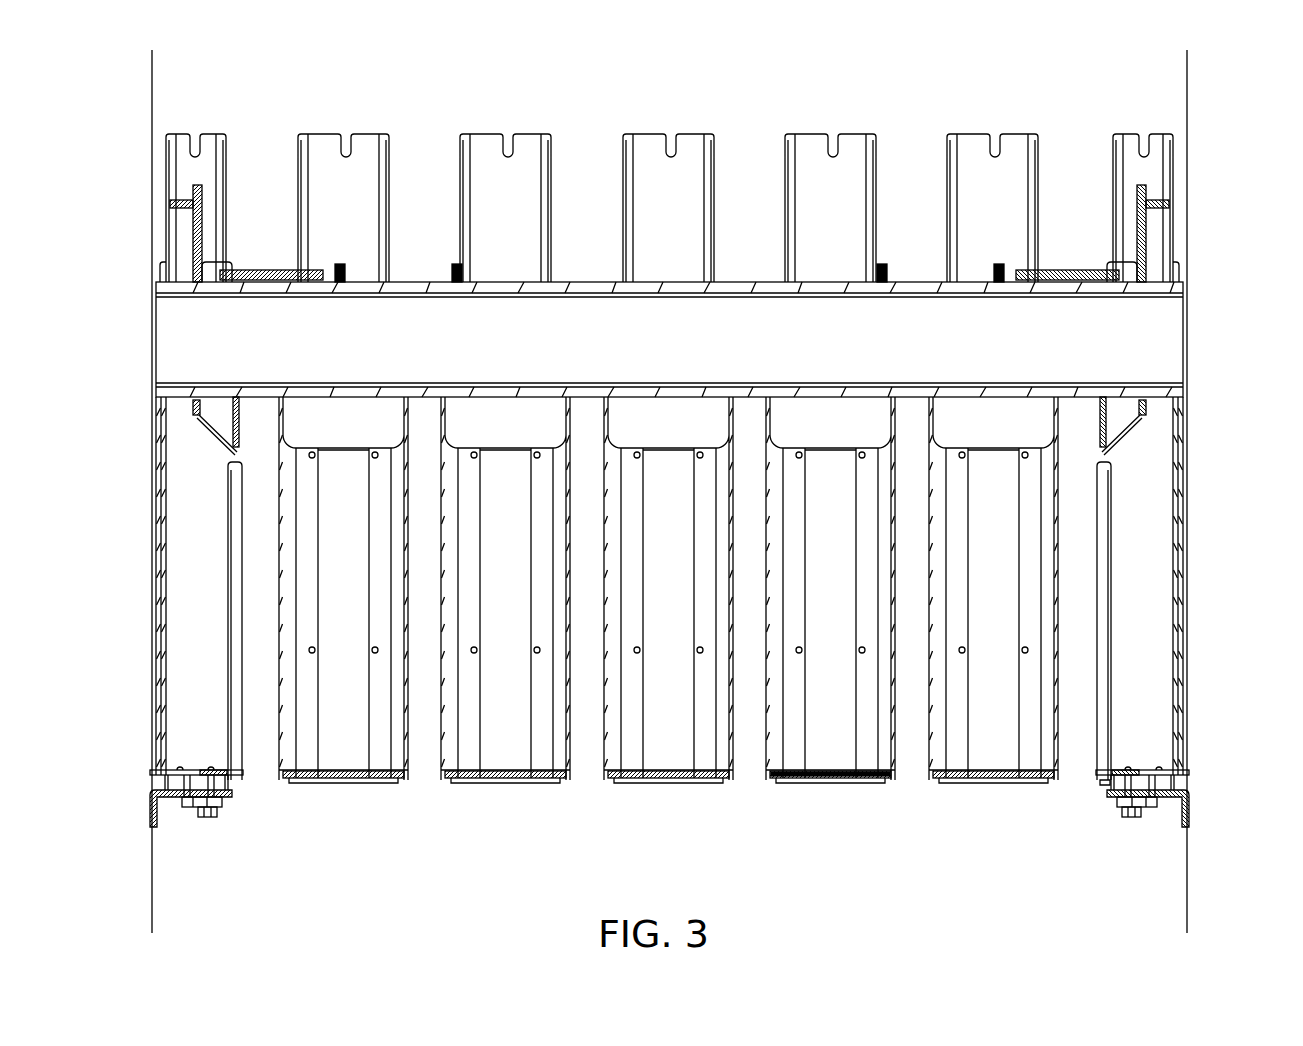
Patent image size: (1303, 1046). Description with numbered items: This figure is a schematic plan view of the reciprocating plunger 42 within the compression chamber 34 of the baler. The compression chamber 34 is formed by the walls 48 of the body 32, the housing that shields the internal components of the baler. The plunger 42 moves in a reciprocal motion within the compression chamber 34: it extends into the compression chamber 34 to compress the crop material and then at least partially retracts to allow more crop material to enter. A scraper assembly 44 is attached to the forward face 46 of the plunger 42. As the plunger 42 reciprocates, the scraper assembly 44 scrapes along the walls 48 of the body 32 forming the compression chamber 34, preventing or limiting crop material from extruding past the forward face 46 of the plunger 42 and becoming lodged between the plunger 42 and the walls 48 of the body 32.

The body 32 is at (152, 890).
The compression chamber 34 is at (602, 864).
The plunger 42 is at (838, 816).
The scraper assembly 44 is at (234, 832).
The forward face 46 is at (1103, 788).
The walls 48 is at (152, 913).